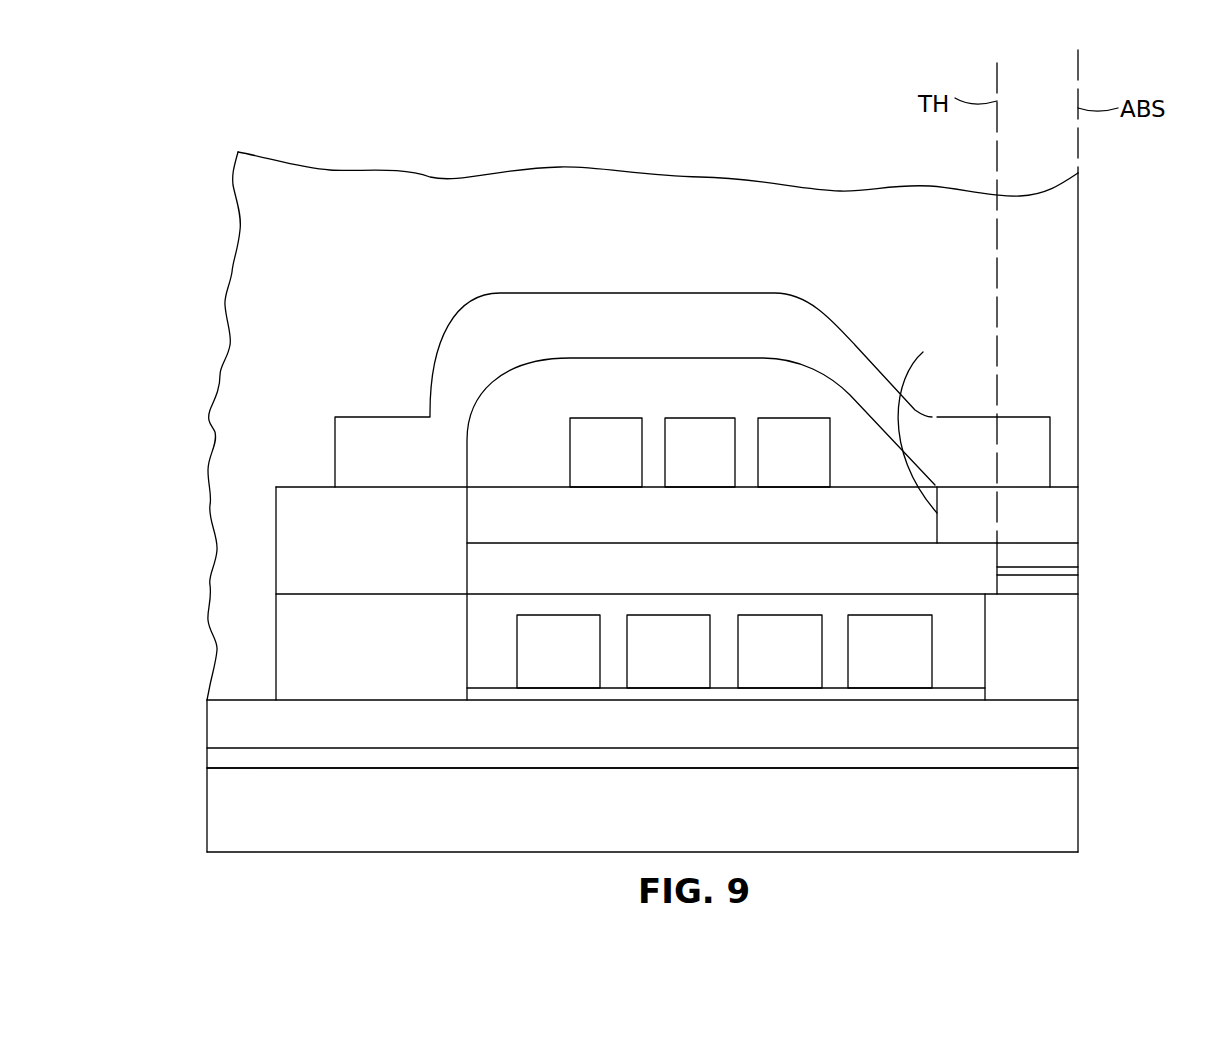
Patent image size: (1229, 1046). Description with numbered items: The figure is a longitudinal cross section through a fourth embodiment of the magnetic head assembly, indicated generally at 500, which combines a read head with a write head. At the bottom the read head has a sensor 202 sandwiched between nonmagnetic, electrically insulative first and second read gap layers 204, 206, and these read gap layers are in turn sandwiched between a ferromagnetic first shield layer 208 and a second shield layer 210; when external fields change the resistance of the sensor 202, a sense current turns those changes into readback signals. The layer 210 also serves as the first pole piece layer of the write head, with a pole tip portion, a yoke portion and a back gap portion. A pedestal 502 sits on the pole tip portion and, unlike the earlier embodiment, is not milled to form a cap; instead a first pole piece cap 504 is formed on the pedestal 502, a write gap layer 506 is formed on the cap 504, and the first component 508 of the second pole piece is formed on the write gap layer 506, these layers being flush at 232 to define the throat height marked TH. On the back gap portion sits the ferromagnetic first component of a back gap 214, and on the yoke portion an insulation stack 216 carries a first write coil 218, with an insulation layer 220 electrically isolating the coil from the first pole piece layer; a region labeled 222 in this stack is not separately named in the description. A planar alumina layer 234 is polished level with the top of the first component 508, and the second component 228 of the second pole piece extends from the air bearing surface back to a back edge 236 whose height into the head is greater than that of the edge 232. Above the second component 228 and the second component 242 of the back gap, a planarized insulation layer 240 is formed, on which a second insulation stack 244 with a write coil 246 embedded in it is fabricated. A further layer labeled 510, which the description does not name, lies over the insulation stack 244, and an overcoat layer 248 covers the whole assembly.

The magnetic write head 500 is at (815, 141).
The overcoat layer 248 is at (433, 210).
The second insulation stack 244 is at (637, 358).
The write coil 246 is at (687, 428).
The upper pole layer 510 is at (718, 325).
The planarized insulation layer 240 is at (713, 520).
The back edge 236 is at (929, 419).
The back vertical edge 232 is at (997, 563).
The second component of the second pole piece 228 is at (1060, 505).
The first component of the second pole piece 508 is at (1063, 557).
The write gap layer 506 is at (1063, 575).
The first pole piece cap 504 is at (1073, 583).
The pedestal 502 is at (1045, 645).
The alumina layer 234 is at (538, 580).
The first write coil 218 is at (767, 628).
The coil insulation 222 is at (612, 640).
The insulation stack 216 is at (797, 593).
The second component of the back gap 242 is at (293, 523).
The first component of a back gap 214 is at (293, 643).
The first pole piece layer 210 is at (1047, 718).
The insulation layer 220 is at (490, 697).
The sensor 202 is at (1045, 757).
The first shield layer 208 is at (830, 805).
The first read gap layer 204 is at (642, 830).
The second read gap layer 206 is at (962, 753).